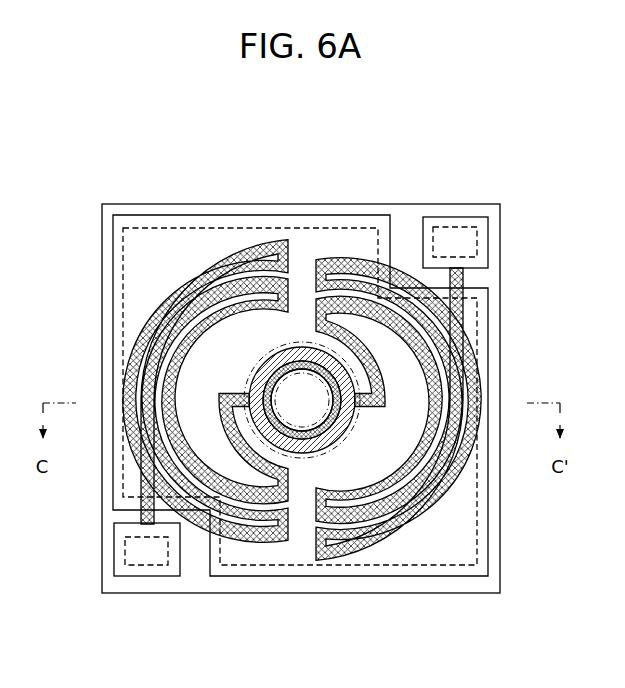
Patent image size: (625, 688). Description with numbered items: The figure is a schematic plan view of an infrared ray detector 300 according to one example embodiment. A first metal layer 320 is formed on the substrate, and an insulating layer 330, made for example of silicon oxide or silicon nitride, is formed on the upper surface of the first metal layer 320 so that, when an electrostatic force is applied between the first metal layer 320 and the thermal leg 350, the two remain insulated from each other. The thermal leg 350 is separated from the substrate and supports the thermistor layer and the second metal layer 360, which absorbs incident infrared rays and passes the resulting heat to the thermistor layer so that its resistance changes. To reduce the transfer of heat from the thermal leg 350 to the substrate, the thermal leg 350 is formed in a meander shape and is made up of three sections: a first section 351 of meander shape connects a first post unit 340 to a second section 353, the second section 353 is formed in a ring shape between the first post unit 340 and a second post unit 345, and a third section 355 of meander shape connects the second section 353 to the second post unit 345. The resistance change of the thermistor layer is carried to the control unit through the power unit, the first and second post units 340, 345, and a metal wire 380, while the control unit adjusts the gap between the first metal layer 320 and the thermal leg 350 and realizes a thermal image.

The infrared ray detector 300 is at (524, 187).
The first metal layer 320 is at (380, 566).
The insulating layer 330 is at (448, 577).
The first post unit 340 is at (147, 577).
The second post unit 345 is at (455, 216).
The thermal leg 350 is at (370, 163).
The first section 351 is at (258, 244).
The second section 353 is at (302, 346).
The third section 355 is at (349, 266).
The second metal layer 360 is at (299, 440).
The metal wire 380 is at (126, 552).